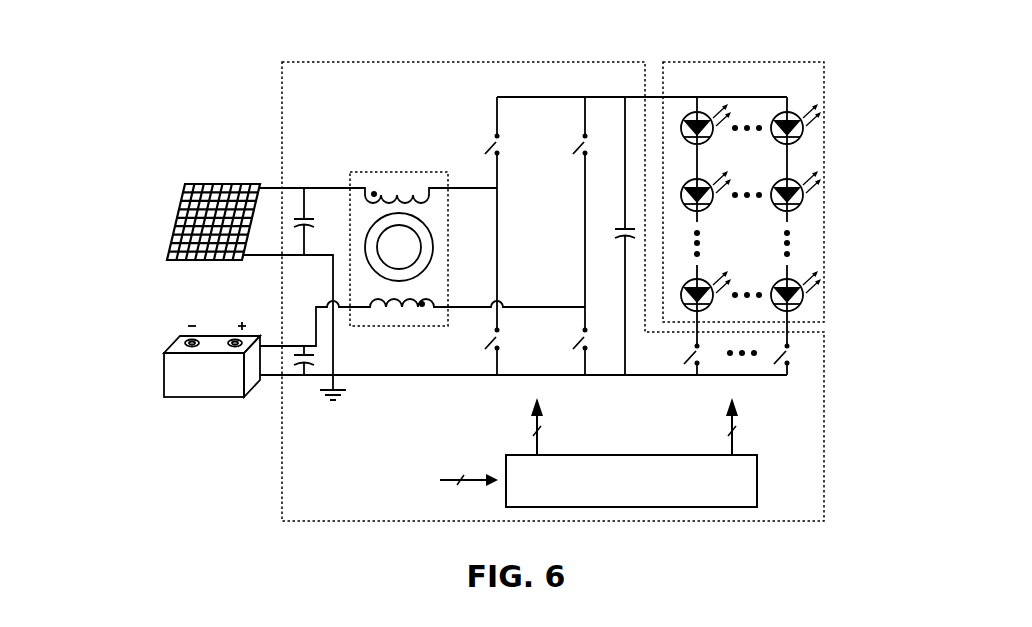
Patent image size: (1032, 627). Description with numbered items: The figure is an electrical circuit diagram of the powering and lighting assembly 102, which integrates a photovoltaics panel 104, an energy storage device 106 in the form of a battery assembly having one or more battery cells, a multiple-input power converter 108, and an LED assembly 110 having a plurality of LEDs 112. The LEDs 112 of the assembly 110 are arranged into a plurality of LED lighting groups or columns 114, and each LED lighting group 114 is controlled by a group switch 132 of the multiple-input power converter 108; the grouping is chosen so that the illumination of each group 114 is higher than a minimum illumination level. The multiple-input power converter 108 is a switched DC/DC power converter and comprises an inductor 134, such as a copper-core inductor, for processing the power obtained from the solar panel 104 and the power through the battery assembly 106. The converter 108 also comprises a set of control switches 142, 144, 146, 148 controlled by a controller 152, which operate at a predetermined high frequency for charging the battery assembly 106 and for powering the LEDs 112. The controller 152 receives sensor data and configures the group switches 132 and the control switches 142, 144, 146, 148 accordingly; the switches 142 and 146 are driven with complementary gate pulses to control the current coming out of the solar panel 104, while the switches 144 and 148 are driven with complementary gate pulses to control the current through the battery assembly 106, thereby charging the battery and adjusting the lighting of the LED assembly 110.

The powering and lighting assembly 102 is at (106, 122).
The photovoltaics (PV) panel 104 is at (178, 216).
The energy storage device 106 is at (164, 372).
The multiple-input power converter 108 is at (282, 83).
The LED assembly 110 is at (825, 78).
The LED 112 is at (803, 138).
The LED lighting group 114 is at (704, 84).
The group switch 132 is at (688, 352).
The inductor 134 is at (398, 172).
The control switch 142 is at (490, 141).
The control switch 144 is at (578, 142).
The control switch 146 is at (484, 344).
The control switch 148 is at (572, 343).
The controller 152 is at (757, 476).